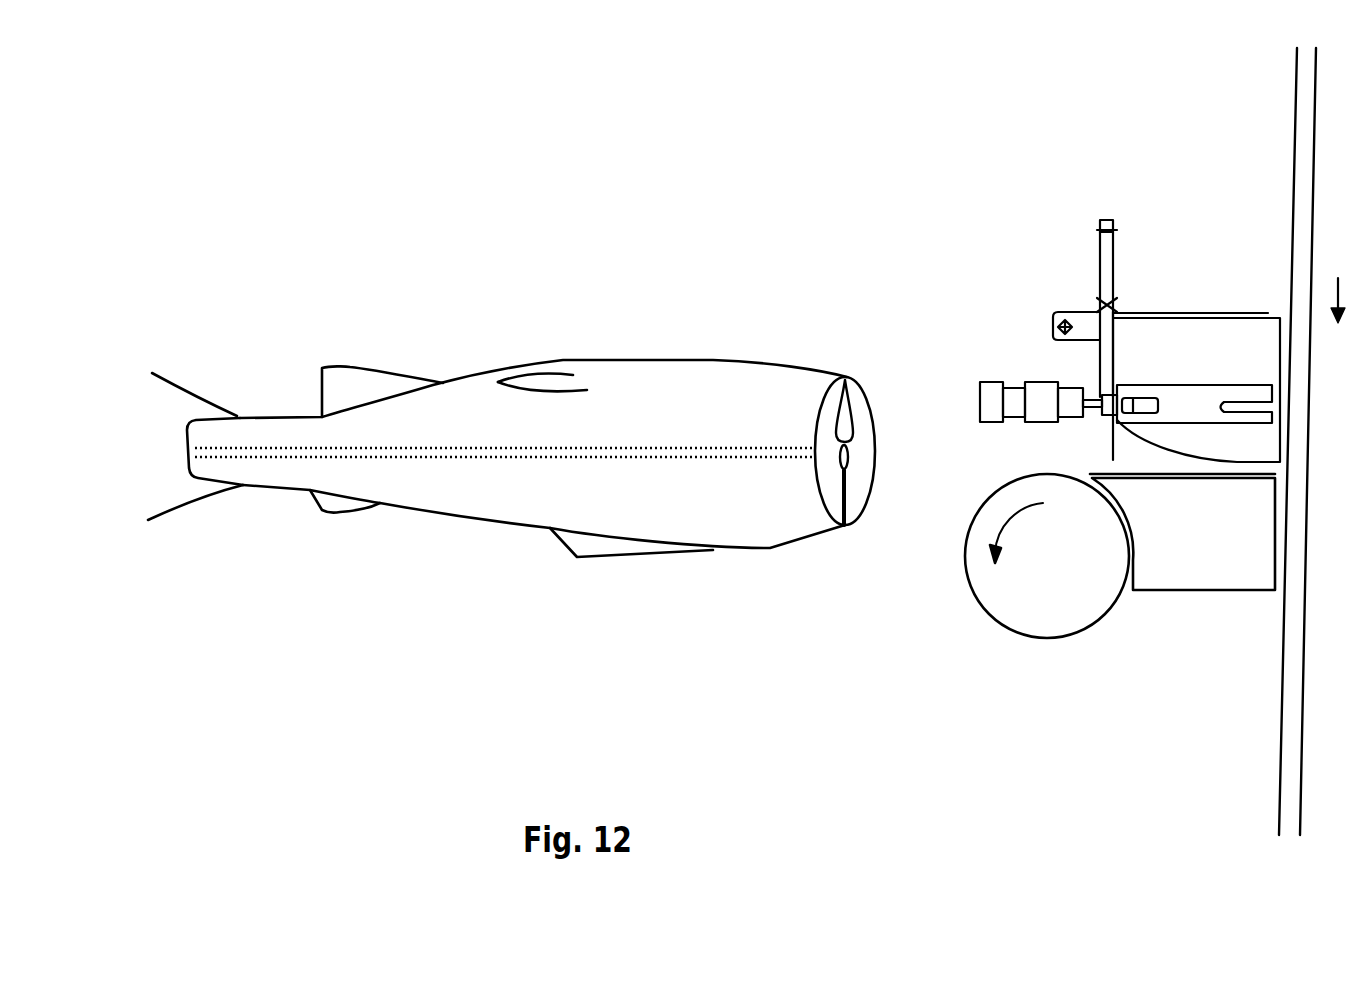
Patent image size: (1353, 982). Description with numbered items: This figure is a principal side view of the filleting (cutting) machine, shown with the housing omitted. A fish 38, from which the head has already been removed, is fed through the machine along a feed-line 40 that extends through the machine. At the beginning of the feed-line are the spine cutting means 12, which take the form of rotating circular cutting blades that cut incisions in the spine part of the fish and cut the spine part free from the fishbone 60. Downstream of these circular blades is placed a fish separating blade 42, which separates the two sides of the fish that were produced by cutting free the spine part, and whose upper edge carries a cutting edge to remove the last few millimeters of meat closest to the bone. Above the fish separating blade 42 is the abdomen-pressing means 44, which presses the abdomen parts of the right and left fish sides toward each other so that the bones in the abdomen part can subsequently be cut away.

The spine cutting means 12 is at (987, 583).
The fish 38 is at (623, 387).
The feed-line 40 is at (1305, 175).
The fish separating blade 42 is at (1180, 562).
The abdomen-pressing means 44 is at (1180, 400).
The fishbone 60 is at (841, 497).